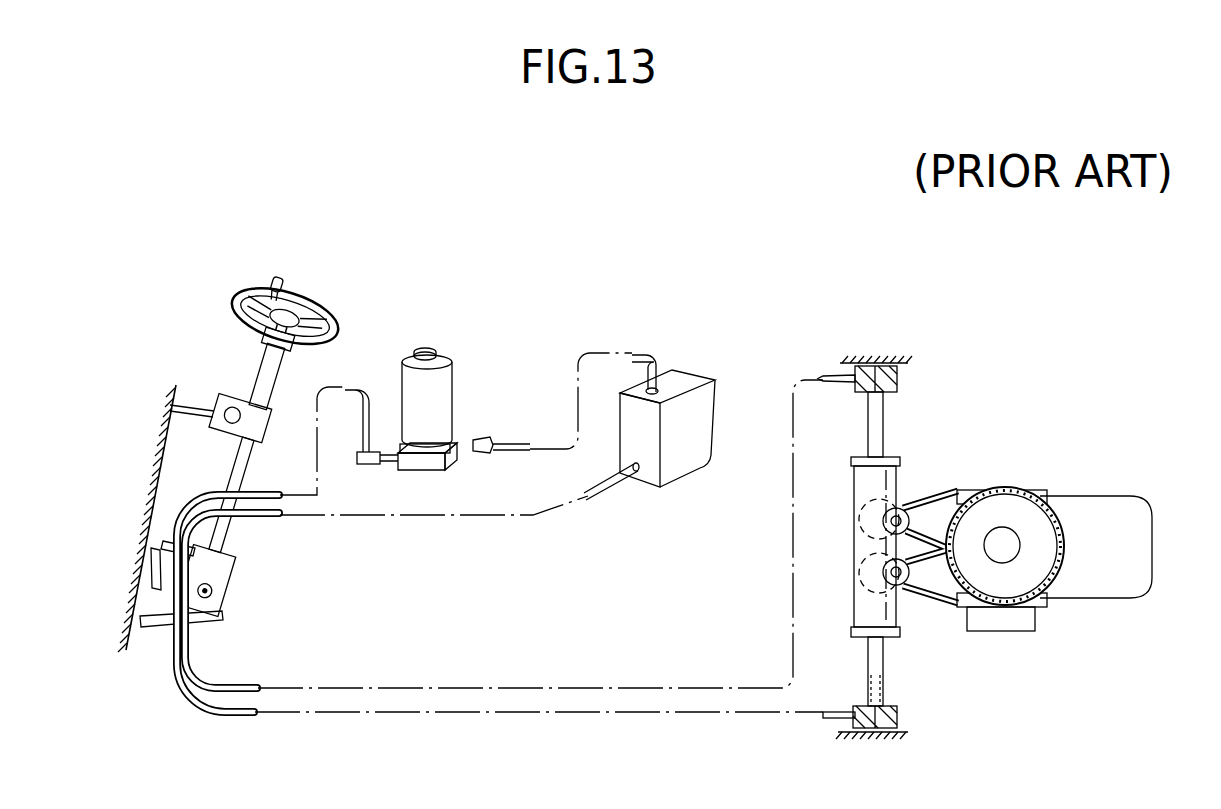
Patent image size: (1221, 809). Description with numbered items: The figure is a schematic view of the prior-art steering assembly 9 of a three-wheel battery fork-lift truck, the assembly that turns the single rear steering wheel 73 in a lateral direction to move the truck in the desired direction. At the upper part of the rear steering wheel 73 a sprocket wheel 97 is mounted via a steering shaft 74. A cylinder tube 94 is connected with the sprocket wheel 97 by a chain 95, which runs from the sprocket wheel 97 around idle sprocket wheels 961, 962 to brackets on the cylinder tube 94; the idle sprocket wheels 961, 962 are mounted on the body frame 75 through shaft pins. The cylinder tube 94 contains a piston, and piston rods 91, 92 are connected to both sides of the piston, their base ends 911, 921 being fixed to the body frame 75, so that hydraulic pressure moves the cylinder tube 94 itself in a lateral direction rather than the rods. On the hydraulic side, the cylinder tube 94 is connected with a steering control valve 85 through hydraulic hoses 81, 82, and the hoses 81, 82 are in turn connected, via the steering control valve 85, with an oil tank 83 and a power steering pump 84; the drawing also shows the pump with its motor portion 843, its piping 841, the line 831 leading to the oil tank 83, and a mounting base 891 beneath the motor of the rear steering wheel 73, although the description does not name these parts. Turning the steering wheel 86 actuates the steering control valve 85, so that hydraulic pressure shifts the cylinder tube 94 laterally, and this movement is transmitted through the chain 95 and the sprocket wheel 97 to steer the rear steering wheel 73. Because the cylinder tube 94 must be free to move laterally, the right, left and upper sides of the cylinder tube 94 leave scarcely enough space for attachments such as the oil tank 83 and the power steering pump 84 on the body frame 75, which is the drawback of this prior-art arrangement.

The steering wheel 86 is at (282, 320).
The body frame 75 is at (162, 447).
The steering control valve 85 is at (150, 540).
The hydraulic hose 81 is at (357, 688).
The hydraulic hose 82 is at (330, 717).
The hydraulic pipe 841 is at (300, 510).
The hydraulic pipe 831 is at (360, 517).
The pump motor 843 is at (438, 383).
The power steering pump 84 is at (428, 465).
The oil tank 83 is at (685, 368).
The base end of piston rod 911 is at (887, 362).
The base end of piston rod 921 is at (880, 745).
The piston rod 91 is at (878, 413).
The piston rod 92 is at (883, 673).
The cylinder tube 94 is at (853, 550).
The idle sprocket wheel 961 is at (860, 517).
The idle sprocket wheel 962 is at (862, 577).
The chain 95 is at (927, 577).
The sprocket wheel 97 is at (1033, 563).
The steering shaft 74 is at (1003, 543).
The rear steering wheel 73 is at (1113, 522).
The motor base 891 is at (1008, 620).
The steering assembly 9 is at (920, 370).